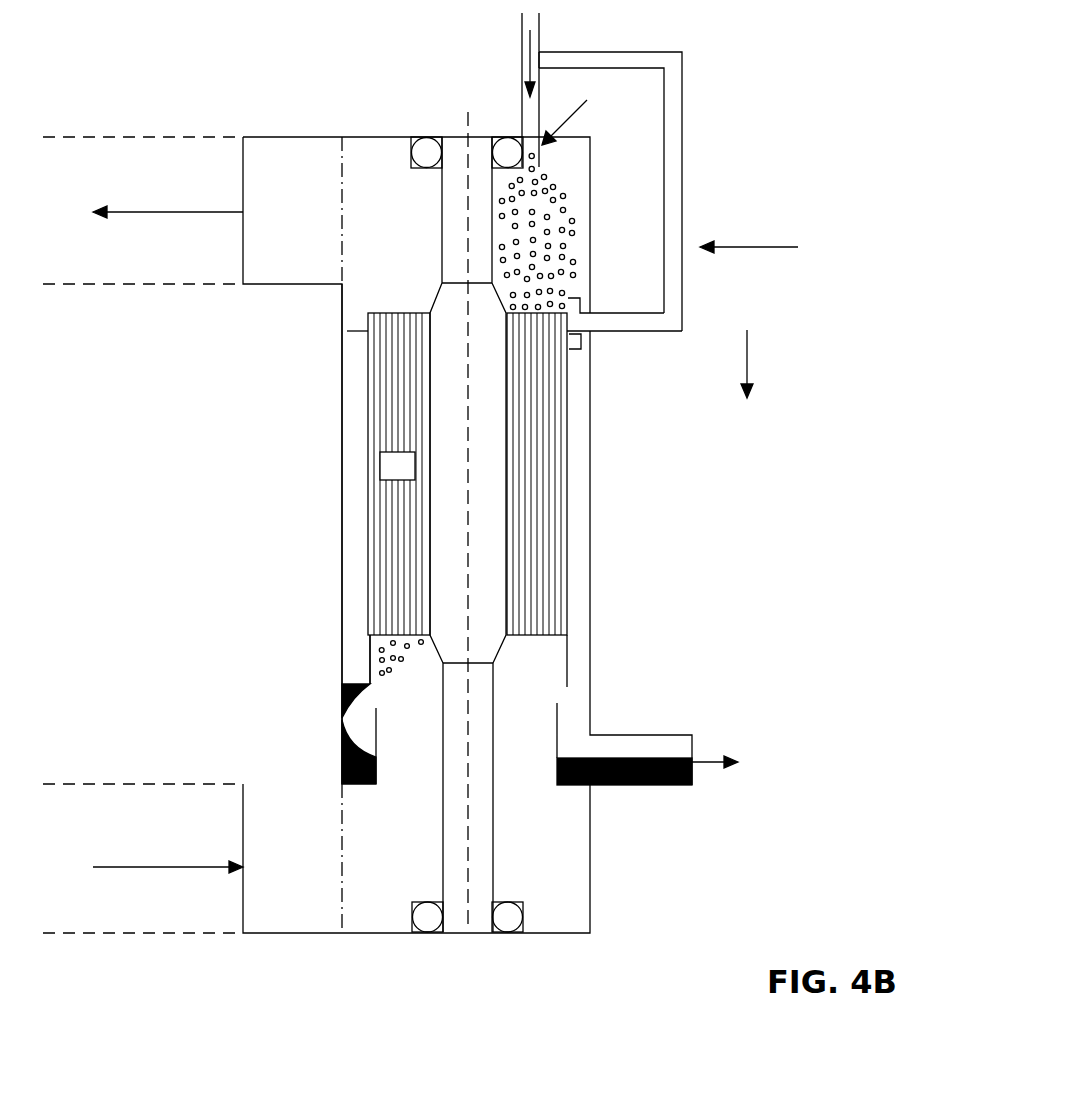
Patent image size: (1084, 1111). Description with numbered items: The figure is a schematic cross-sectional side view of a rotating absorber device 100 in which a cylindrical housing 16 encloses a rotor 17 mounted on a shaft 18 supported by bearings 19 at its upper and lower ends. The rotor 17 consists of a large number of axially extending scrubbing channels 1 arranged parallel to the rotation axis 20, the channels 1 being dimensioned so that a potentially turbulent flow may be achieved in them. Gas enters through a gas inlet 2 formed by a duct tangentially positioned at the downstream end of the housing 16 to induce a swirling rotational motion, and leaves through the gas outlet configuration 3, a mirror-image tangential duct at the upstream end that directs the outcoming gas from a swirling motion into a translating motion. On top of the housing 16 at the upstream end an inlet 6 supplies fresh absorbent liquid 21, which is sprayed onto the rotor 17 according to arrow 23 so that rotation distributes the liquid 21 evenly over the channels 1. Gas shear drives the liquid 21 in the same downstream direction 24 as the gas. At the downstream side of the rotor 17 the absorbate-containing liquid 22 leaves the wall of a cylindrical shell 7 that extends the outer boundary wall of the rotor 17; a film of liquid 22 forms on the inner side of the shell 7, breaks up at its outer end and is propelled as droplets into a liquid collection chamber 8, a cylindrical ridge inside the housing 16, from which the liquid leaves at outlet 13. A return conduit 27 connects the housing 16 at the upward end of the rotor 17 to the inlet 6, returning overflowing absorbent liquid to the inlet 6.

The scrubbing channels 1 is at (399, 474).
The gas inlet 2 is at (168, 847).
The gas outlet configuration 3 is at (168, 230).
The inlet 6 is at (568, 108).
The cylindrical shell 7 is at (358, 659).
The liquid collection chamber 8 is at (344, 734).
The outlet 13 is at (673, 767).
The housing 16 is at (342, 465).
The rotor 17 is at (567, 448).
The shaft 18 is at (455, 147).
The bearings 19 is at (422, 150).
The rotation axis 20 is at (470, 853).
The absorbent liquid 21 is at (565, 200).
The absorbate-containing liquid 22 is at (403, 661).
The arrow 23 is at (522, 43).
The downstream direction 24 is at (747, 348).
The return conduit 27 is at (670, 150).
The rotating absorber device 100 is at (781, 248).